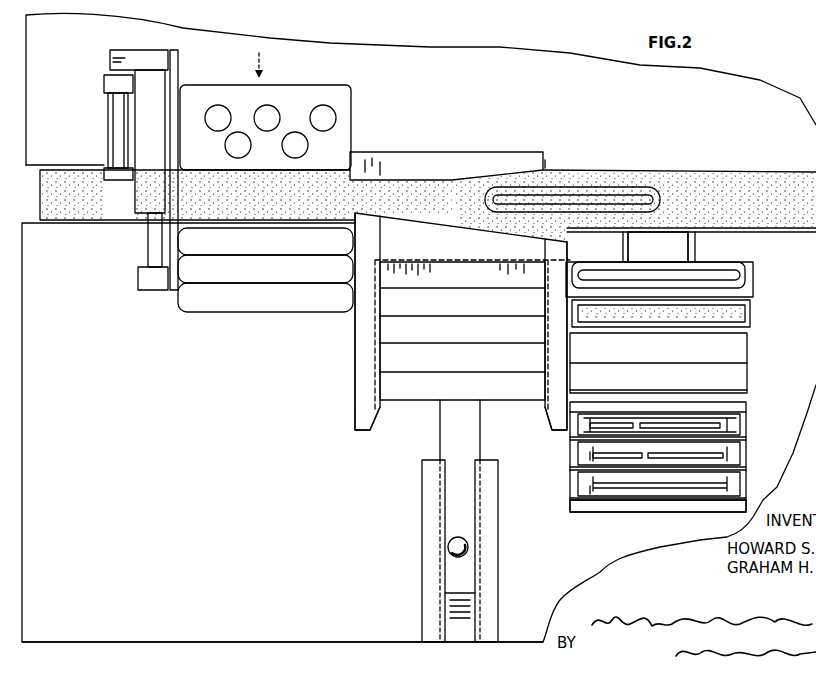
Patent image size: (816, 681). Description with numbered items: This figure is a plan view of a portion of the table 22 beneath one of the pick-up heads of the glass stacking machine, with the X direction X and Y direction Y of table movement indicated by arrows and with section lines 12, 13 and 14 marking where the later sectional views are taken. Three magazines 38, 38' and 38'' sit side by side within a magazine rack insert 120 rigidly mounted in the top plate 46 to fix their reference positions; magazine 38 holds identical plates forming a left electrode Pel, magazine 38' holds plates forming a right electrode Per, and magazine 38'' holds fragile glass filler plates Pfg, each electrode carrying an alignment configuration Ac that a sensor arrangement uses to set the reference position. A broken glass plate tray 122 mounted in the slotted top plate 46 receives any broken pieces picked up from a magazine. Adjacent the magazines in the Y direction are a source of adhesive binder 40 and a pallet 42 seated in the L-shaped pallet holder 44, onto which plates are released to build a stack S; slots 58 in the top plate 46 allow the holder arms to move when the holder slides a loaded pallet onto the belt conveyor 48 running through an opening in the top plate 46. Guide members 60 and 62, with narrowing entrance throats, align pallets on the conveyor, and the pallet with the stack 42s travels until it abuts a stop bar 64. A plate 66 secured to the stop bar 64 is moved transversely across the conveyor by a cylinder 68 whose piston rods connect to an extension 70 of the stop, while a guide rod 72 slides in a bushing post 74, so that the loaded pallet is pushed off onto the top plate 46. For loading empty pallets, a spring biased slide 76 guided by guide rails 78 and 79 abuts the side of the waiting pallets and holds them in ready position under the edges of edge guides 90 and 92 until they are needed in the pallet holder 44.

The section line 12— 12 is at (464, 132).
The section line 13— 13 is at (628, 135).
The section line 14— 14 is at (346, 272).
The table 22 is at (202, 643).
The magazine 38 is at (678, 439).
The magazine 38' is at (679, 453).
The magazine 38'' is at (678, 484).
The source of adhesive binder 40 is at (758, 320).
The pallet 42 is at (236, 303).
The pallet with the stack 42s is at (622, 195).
The pallet holder 44 is at (762, 288).
The top plate 46 is at (62, 291).
The belt conveyor 48 is at (80, 185).
The slots 58 is at (623, 247).
The guide member 60 is at (452, 180).
The guide member 62 is at (455, 222).
The stop bar 64 is at (177, 210).
The plate 66 is at (272, 155).
The cylinder 68 is at (108, 110).
The extension 70 is at (152, 58).
The guide rod 72 is at (148, 243).
The bushing post 74 is at (138, 278).
The slide 76 is at (482, 450).
The guide rail 78 is at (422, 533).
The guide rail 79 is at (498, 565).
The edge guide 90 is at (355, 395).
The edge guide 92 is at (556, 386).
The magazine rack insert 120 is at (645, 500).
The broken glass plate tray 122 is at (733, 353).
The stack S is at (665, 275).
The alignment configuration Ac is at (636, 424).
The left electrode plate Pel is at (707, 424).
The right electrode plate Per is at (590, 456).
The filler glass plate Pfg is at (590, 490).
The X direction X is at (254, 505).
The Y direction Y is at (208, 446).